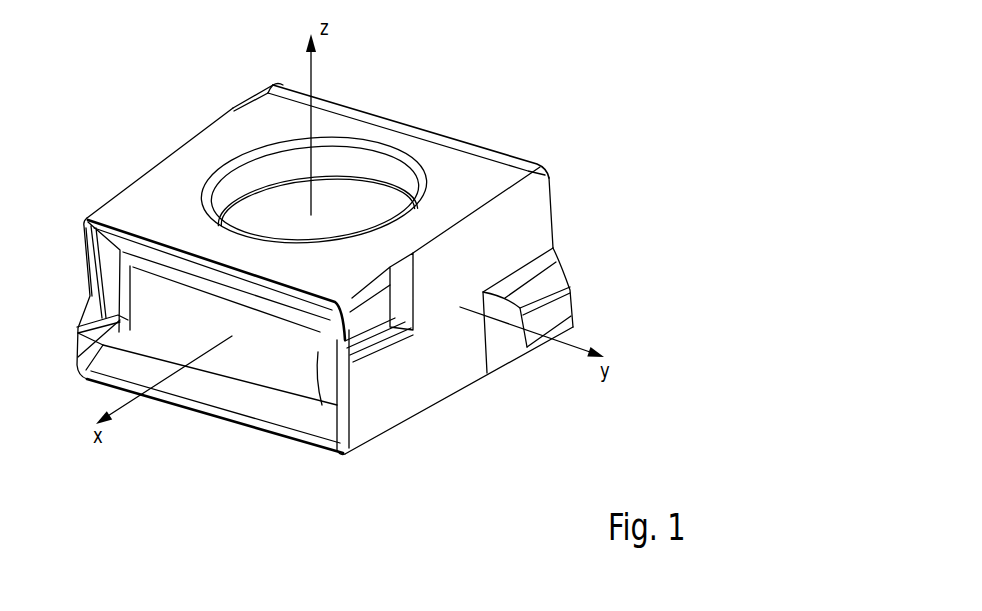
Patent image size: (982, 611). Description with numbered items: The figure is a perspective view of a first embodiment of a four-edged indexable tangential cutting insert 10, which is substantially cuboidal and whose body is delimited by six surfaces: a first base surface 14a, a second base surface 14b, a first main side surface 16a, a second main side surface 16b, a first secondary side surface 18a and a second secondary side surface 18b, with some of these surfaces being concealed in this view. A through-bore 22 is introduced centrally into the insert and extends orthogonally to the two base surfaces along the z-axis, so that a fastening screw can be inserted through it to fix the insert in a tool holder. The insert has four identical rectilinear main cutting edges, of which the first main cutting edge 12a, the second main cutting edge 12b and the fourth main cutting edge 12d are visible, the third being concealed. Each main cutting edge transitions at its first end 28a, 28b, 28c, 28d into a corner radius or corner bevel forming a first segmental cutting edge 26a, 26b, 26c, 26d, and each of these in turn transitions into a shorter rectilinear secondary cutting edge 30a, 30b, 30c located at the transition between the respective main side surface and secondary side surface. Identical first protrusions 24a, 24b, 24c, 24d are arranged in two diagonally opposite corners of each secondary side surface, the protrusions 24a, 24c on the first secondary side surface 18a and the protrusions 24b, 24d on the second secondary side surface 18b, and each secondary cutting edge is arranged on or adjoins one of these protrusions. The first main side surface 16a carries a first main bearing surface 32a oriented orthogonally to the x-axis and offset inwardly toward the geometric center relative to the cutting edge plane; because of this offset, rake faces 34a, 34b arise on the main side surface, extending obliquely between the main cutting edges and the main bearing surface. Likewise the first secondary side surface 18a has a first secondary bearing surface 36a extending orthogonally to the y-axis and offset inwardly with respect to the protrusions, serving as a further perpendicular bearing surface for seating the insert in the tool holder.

The cutting insert 10 is at (588, 80).
The first main cutting edge 12a is at (176, 243).
The second main cutting edge 12b is at (194, 412).
The fourth main cutting edge 12d is at (383, 117).
The first base surface 14a is at (257, 122).
The second base surface 14b is at (431, 404).
The first main side surface 16a is at (269, 378).
The second main side surface 16b is at (549, 186).
The first secondary side surface 18a is at (504, 253).
The second secondary side surface 18b is at (137, 169).
The through-bore 22 is at (336, 190).
The first protrusion 24a is at (375, 308).
The first protrusion 24b is at (76, 343).
The first protrusion 24c is at (563, 312).
The first protrusion 24d is at (236, 106).
The first segmental cutting edge 26a is at (352, 300).
The first segmental cutting edge 26b is at (79, 368).
The first segmental cutting edge 26c is at (573, 326).
The first segmental cutting edge 26d is at (283, 87).
The first end 28a is at (345, 300).
The first end 28b is at (90, 381).
The first end 28c is at (567, 273).
The first end 28d is at (288, 84).
The secondary cutting edge 30a is at (361, 321).
The secondary cutting edge 30b is at (76, 333).
The secondary cutting edge 30c is at (571, 284).
The first main bearing surface 32a is at (247, 353).
The first rake face 34a is at (226, 278).
The second rake face 34b is at (309, 411).
The first secondary bearing surface 36a is at (461, 355).